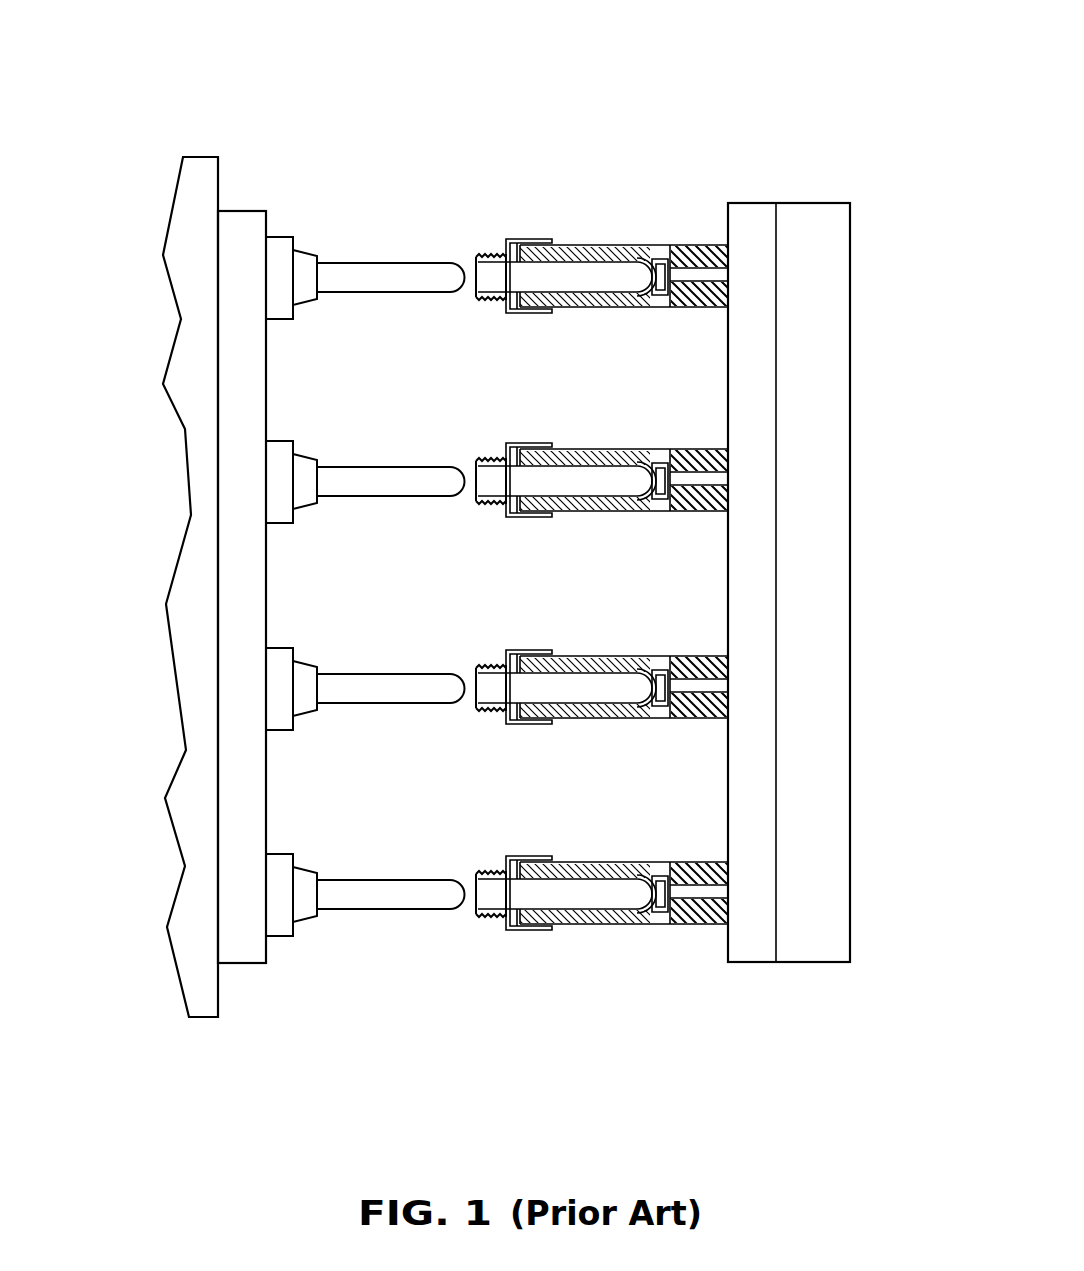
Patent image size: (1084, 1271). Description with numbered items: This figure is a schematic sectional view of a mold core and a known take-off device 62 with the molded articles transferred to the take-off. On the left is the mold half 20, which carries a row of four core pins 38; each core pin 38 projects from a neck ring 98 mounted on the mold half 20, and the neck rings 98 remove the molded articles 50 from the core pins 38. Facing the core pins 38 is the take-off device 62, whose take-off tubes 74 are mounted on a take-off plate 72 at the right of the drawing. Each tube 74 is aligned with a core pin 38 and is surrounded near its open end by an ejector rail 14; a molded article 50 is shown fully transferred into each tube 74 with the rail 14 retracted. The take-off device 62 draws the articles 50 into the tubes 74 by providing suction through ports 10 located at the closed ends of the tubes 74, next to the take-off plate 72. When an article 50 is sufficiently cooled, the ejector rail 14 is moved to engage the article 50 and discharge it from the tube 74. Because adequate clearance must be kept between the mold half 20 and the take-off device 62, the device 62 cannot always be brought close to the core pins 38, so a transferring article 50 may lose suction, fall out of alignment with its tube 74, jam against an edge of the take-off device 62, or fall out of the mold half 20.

The mold half 20 is at (92, 166).
The take-off device 62 is at (490, 120).
The molded article 50 is at (496, 252).
The ejector rail 14 is at (538, 313).
The take-off tube 74 is at (577, 309).
The port 10 is at (670, 307).
The take-off plate 72 is at (832, 297).
The core pin 38 is at (387, 496).
The neck ring 98 is at (279, 858).